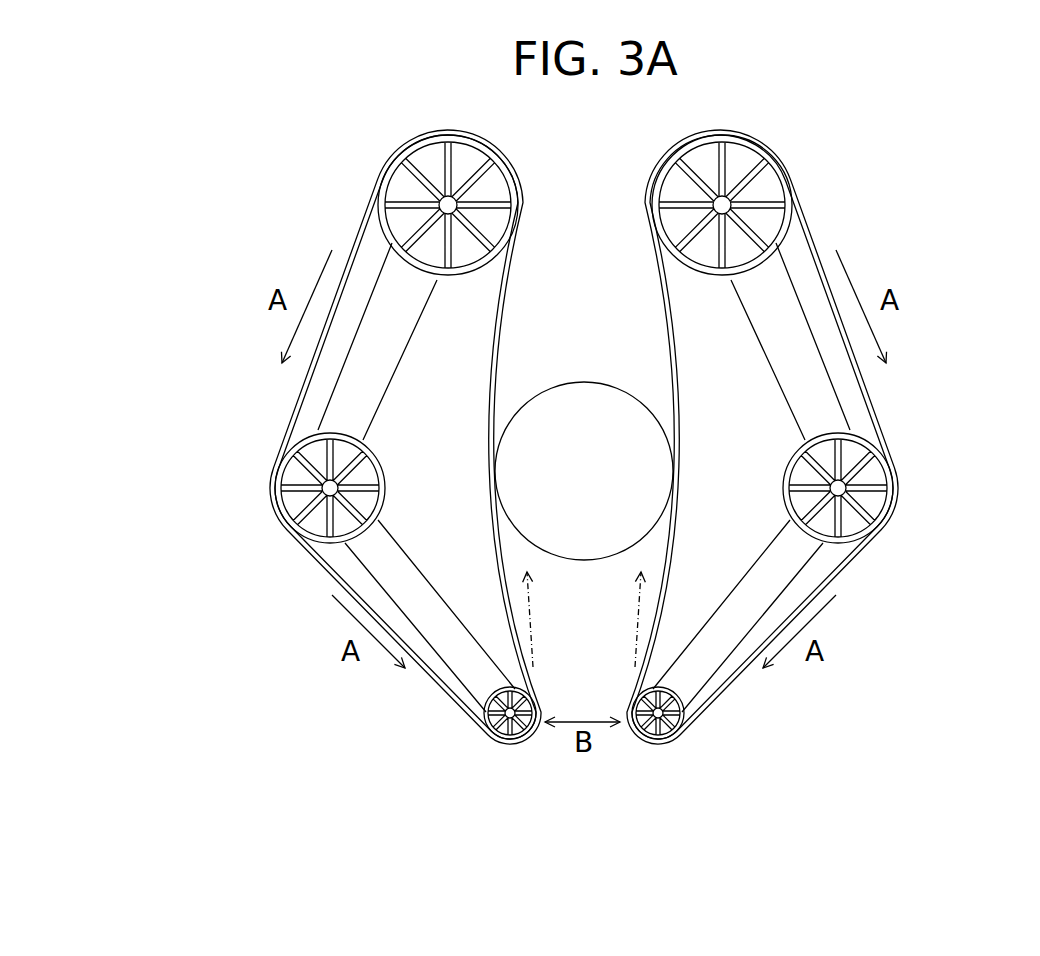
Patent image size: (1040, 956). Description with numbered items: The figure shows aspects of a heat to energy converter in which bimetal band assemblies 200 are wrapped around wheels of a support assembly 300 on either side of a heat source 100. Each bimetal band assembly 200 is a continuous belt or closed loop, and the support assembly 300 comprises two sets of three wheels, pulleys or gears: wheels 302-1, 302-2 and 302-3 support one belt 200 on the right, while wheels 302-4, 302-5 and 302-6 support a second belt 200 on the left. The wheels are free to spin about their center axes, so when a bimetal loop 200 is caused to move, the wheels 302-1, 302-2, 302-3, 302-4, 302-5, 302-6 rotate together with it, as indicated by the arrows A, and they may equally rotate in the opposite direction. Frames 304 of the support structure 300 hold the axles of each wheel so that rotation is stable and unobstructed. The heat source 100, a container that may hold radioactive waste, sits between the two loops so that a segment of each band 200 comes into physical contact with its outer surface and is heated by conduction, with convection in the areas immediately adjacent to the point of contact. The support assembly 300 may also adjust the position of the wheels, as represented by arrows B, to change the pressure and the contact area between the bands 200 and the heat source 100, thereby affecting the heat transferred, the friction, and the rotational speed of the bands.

The heat source 100 is at (593, 570).
The bimetal band assembly 200 is at (292, 412).
The support assembly 300 is at (818, 465).
The wheel 302-1 is at (750, 158).
The wheel 302-2 is at (890, 506).
The wheel 302-3 is at (672, 738).
The wheel 302-4 is at (418, 158).
The wheel 302-5 is at (278, 506).
The wheel 302-6 is at (497, 740).
The frame 304 is at (405, 578).